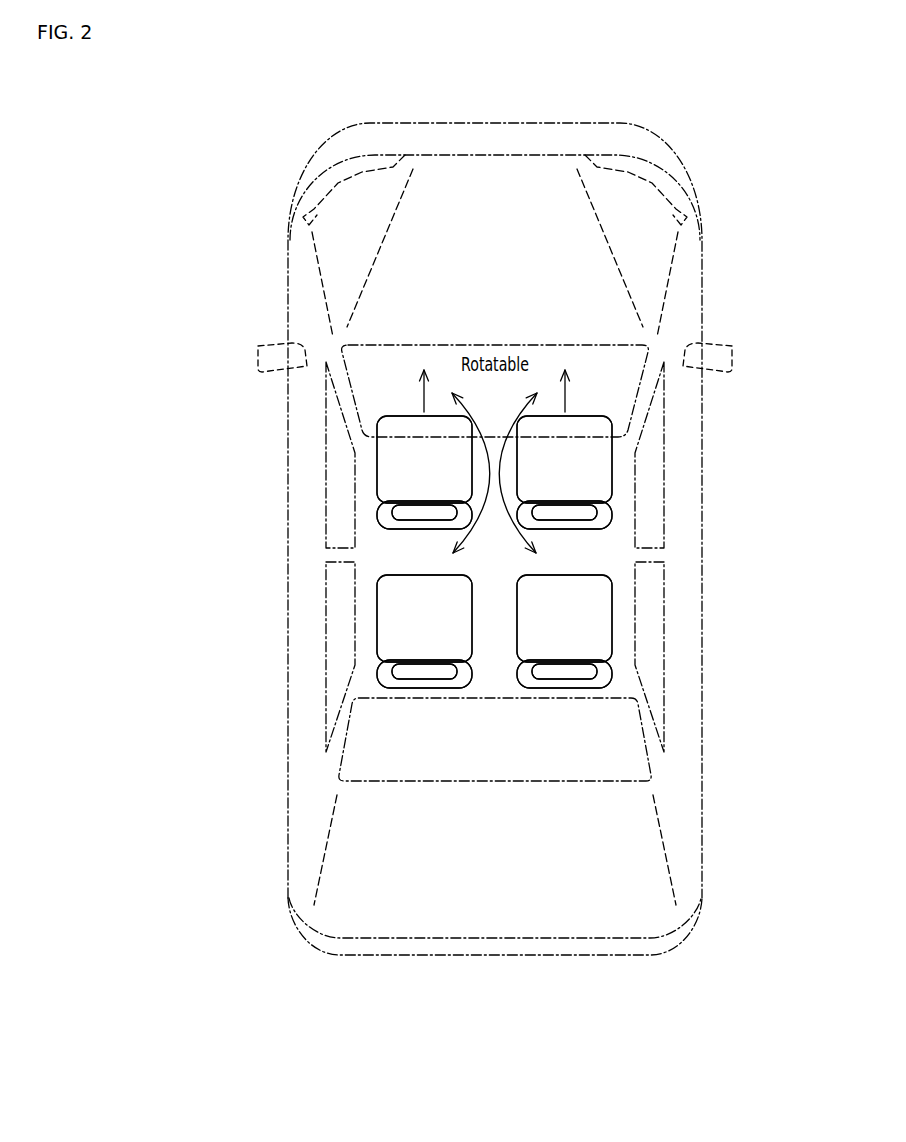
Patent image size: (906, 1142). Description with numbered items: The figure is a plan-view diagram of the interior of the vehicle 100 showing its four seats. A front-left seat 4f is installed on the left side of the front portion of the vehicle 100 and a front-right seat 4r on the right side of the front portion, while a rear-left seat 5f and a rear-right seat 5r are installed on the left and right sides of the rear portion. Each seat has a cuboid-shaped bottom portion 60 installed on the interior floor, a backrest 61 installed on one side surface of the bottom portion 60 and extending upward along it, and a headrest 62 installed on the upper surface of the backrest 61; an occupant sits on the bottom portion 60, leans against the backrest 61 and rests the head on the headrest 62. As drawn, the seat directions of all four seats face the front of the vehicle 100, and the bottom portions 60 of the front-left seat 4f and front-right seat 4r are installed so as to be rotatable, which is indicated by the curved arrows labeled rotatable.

The vehicle 100 is at (703, 210).
The front-left seat 4f is at (374, 468).
The front-right seat 4r is at (616, 461).
The rear-left seat 5f is at (374, 618).
The rear-right seat 5r is at (616, 621).
The bottom portion 60 is at (383, 432).
The backrest 61 is at (385, 515).
The headrest 62 is at (400, 520).